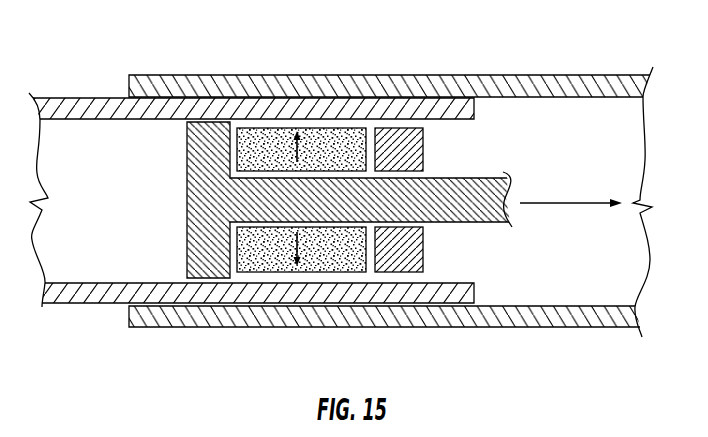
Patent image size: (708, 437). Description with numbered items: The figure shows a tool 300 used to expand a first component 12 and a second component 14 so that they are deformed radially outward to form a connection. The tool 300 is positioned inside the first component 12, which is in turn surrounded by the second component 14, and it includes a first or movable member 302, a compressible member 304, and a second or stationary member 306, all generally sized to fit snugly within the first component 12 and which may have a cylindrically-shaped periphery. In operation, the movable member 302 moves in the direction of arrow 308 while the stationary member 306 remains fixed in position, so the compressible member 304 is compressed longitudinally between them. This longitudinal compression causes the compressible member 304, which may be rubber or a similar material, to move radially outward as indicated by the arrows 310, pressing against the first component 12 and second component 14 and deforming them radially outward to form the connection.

The first component 12 is at (89, 107).
The second component 14 is at (552, 83).
The tool 300 is at (297, 148).
The movable member 302 is at (202, 170).
The compressible member 304 is at (340, 135).
The stationary member 306 is at (410, 150).
The arrow 308 is at (563, 201).
The swelling direction arrows 310 is at (290, 150).